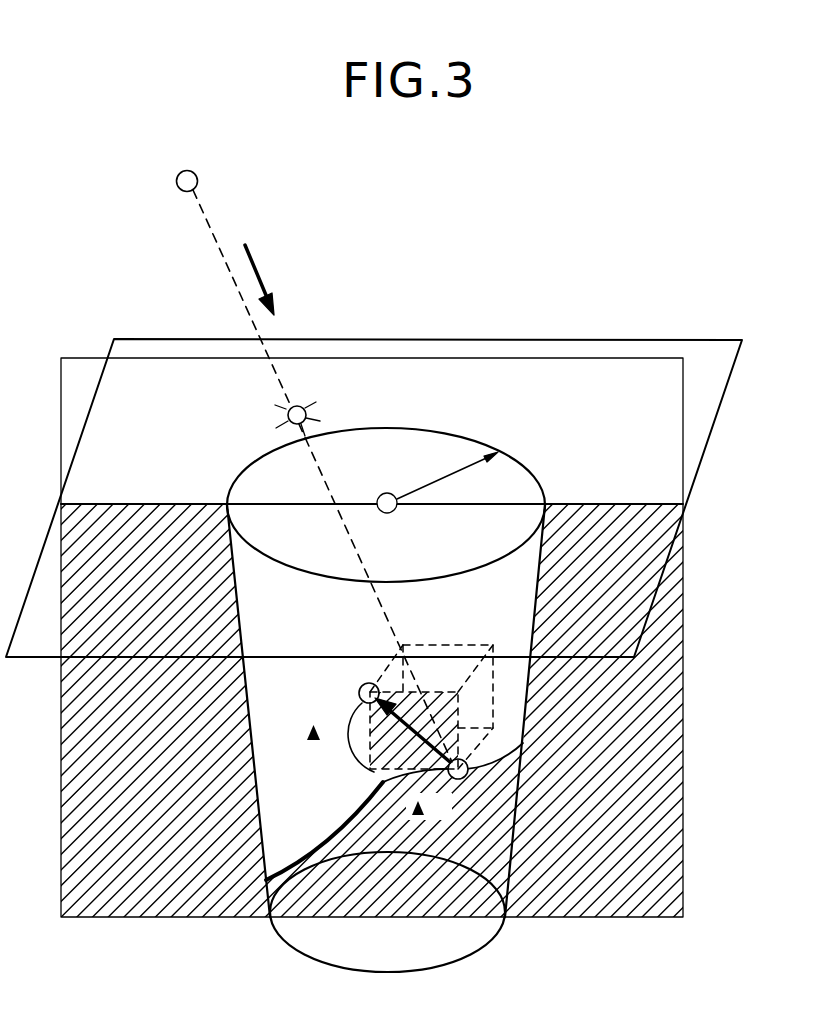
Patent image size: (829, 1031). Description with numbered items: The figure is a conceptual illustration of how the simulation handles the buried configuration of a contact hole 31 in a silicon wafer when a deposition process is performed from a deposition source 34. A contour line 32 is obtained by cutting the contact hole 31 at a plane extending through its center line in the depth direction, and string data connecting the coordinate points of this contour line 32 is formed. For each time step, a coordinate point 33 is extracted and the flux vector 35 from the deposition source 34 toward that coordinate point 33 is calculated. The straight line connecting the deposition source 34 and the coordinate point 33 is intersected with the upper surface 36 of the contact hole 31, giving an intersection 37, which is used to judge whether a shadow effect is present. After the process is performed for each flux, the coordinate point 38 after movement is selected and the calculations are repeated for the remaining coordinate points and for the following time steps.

The contact hole 31 is at (323, 940).
The contour line 32 is at (535, 622).
The coordinate point 33 is at (467, 771).
The deposition source 34 is at (311, 446).
The flux vector 35 is at (258, 272).
The upper surface 36 is at (704, 358).
The intersection 37 is at (302, 402).
The coordinate point after movement 38 is at (362, 688).